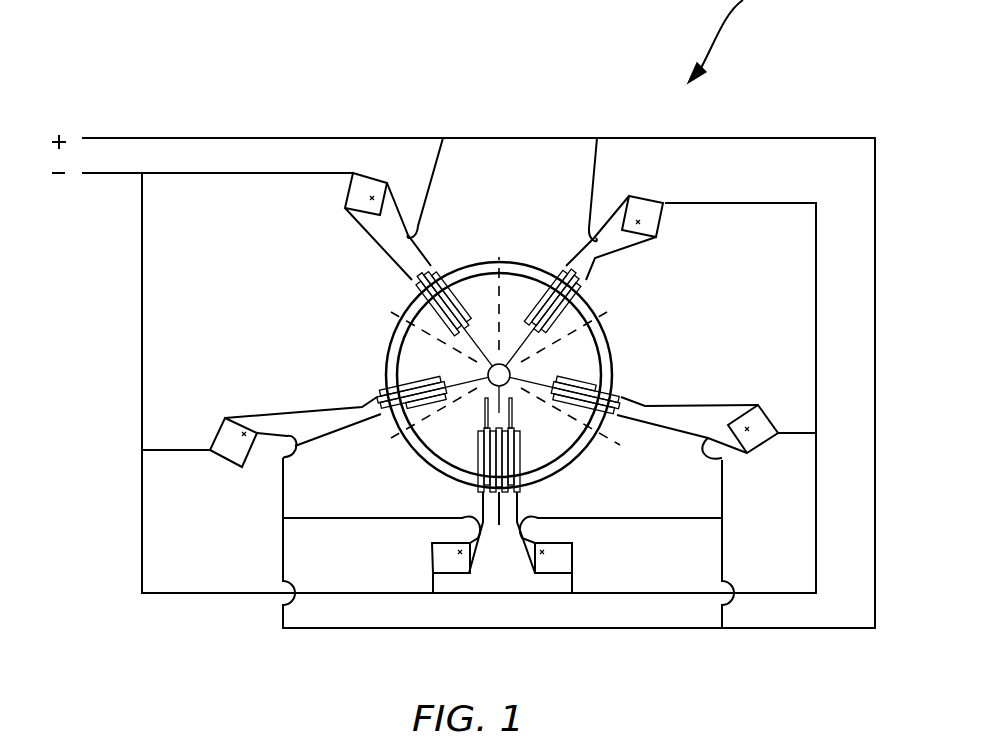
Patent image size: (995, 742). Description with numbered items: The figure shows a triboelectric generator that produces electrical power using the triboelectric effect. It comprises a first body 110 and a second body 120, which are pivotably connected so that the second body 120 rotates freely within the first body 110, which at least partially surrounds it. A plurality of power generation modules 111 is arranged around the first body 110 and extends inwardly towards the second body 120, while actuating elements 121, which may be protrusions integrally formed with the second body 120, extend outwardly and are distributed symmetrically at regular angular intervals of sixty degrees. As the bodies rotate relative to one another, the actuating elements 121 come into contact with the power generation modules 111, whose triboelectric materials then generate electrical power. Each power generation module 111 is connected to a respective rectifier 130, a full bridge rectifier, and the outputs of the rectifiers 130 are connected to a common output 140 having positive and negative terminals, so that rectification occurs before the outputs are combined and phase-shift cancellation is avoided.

The first body 110 is at (388, 360).
The power generation module 111 is at (632, 422).
The second body 120 is at (563, 380).
The actuating element 121 is at (500, 337).
The rectifier 130 is at (345, 200).
The common output 140 is at (118, 138).